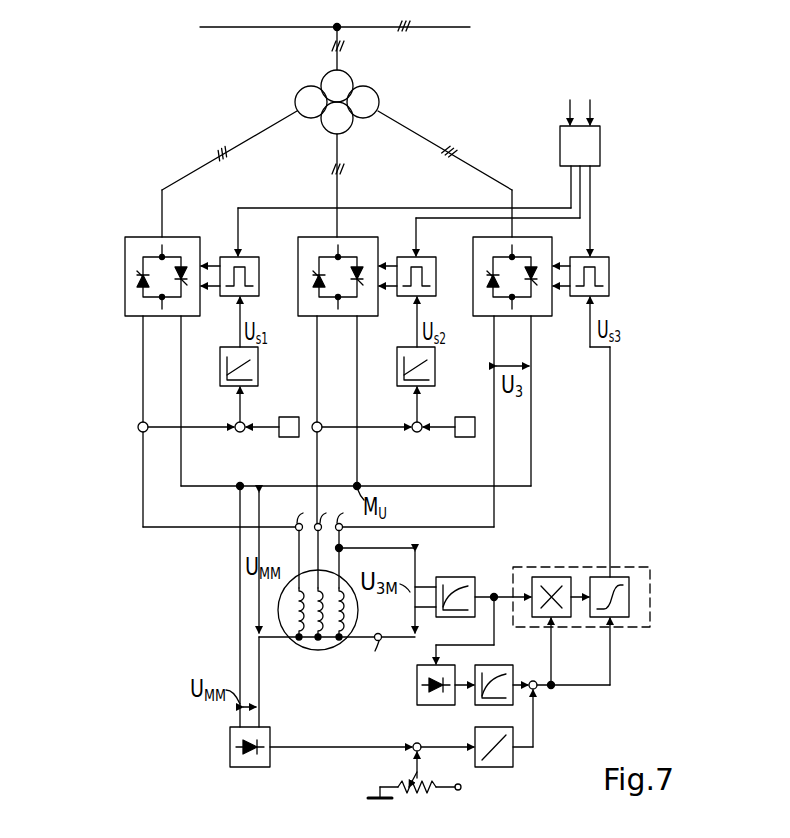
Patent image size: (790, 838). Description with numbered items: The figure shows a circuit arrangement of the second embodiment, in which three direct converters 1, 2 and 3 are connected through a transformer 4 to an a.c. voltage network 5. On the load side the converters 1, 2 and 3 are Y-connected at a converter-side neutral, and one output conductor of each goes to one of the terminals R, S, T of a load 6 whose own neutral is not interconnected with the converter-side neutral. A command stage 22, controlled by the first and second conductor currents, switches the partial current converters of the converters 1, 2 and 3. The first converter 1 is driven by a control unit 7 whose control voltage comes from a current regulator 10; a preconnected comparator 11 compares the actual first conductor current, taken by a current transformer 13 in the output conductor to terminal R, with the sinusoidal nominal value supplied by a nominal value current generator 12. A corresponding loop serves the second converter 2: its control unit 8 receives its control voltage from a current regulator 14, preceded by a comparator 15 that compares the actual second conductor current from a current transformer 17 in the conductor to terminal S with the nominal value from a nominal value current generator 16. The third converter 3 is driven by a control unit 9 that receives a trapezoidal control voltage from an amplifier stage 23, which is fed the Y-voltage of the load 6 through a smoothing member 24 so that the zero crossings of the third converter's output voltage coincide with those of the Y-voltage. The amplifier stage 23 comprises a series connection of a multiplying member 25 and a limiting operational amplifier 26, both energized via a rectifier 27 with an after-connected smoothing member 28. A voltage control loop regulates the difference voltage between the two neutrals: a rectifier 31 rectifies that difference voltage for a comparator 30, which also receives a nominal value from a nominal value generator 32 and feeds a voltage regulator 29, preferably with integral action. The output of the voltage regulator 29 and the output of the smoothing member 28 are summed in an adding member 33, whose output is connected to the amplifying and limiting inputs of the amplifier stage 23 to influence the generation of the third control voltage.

The first converter 1 is at (125, 253).
The second converter 2 is at (298, 256).
The third converter 3 is at (473, 258).
The transformer 4 is at (359, 83).
The a.c. voltage network 5 is at (200, 27).
The load 6 is at (314, 662).
The control unit 7 is at (246, 257).
The control unit 8 is at (426, 257).
The control unit 9 is at (604, 257).
The current regulator 10 is at (258, 360).
The comparator 11 is at (240, 432).
The nominal value current generator 12 is at (285, 417).
The current transformer 13 is at (146, 422).
The current regulator 14 is at (435, 360).
The comparator 15 is at (417, 432).
The nominal value current generator 16 is at (461, 417).
The current transformer 17 is at (321, 422).
The command stage 22 is at (599, 151).
The amplifier stage 23 is at (628, 567).
The smoothing member 24 is at (450, 577).
The multiplying member 25 is at (543, 569).
The limiting operational amplifier 26 is at (604, 569).
The rectifier 27 is at (417, 688).
The smoothing member 28 is at (503, 672).
The voltage regulator 29 is at (514, 764).
The comparator 30 is at (420, 740).
The rectifier 31 is at (227, 749).
The nominal value generator 32 is at (406, 780).
The adding member 33 is at (537, 688).